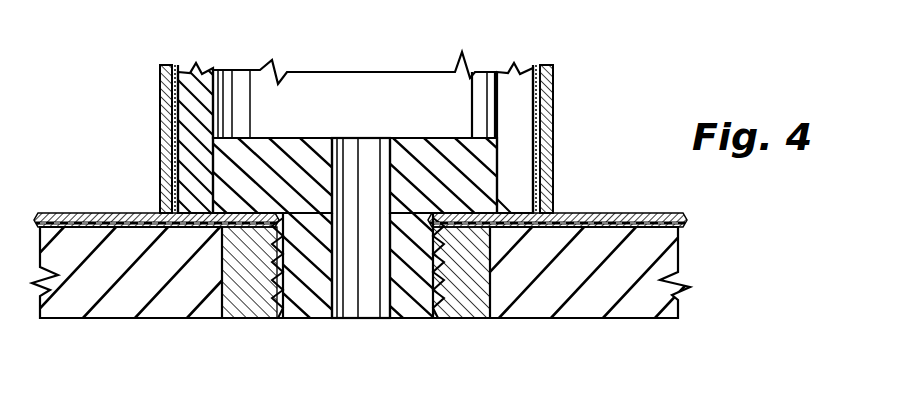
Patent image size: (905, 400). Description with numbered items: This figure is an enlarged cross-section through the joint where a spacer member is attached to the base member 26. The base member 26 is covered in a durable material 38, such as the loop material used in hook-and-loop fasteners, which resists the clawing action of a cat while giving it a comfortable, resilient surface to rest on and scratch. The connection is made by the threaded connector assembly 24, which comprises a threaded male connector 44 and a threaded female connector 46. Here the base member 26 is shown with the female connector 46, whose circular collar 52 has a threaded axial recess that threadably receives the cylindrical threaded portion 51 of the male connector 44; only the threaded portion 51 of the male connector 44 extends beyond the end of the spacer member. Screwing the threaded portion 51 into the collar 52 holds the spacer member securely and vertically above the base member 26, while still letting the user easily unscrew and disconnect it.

The threaded connector assembly 24 is at (335, 133).
The base member 26 is at (647, 303).
The durable material 38 is at (130, 213).
The threaded male connector 44 is at (333, 245).
The threaded female connector 46 is at (297, 270).
The threaded portion 51 is at (313, 240).
The circular collar 52 is at (240, 267).